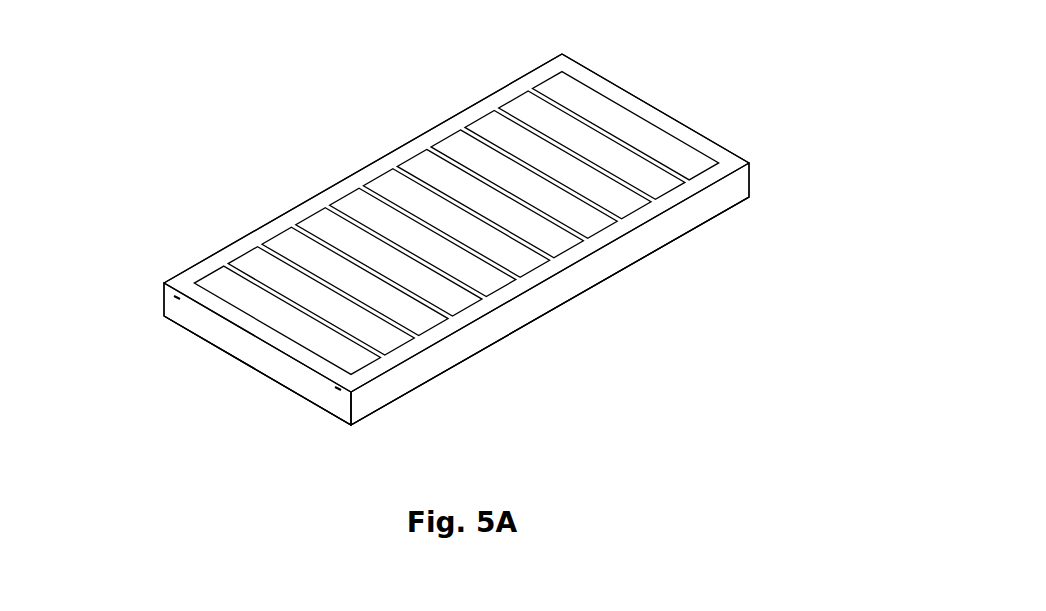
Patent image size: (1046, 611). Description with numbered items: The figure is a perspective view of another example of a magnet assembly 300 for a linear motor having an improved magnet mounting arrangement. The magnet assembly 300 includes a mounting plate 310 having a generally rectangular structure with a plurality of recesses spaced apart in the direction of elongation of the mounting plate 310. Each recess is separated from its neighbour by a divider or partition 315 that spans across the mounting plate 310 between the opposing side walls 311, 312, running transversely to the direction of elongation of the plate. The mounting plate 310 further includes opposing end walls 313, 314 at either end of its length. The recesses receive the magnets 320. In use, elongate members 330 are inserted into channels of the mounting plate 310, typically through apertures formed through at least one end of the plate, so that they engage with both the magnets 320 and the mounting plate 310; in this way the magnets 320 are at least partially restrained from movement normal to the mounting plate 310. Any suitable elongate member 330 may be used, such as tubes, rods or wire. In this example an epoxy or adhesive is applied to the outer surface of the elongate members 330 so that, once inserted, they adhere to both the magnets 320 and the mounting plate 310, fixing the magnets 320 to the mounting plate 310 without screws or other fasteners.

The magnet assembly 300 is at (683, 90).
The mounting plate 310 is at (518, 323).
The side wall 311 is at (587, 273).
The side wall 312 is at (384, 158).
The end wall 313 is at (232, 343).
The end wall 314 is at (703, 132).
The partition 315 is at (335, 288).
The magnet 320 is at (298, 258).
The elongate member 330 is at (177, 297).